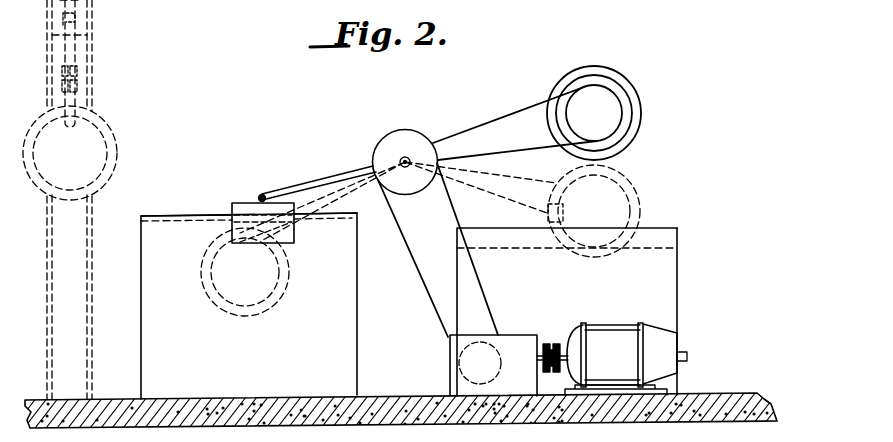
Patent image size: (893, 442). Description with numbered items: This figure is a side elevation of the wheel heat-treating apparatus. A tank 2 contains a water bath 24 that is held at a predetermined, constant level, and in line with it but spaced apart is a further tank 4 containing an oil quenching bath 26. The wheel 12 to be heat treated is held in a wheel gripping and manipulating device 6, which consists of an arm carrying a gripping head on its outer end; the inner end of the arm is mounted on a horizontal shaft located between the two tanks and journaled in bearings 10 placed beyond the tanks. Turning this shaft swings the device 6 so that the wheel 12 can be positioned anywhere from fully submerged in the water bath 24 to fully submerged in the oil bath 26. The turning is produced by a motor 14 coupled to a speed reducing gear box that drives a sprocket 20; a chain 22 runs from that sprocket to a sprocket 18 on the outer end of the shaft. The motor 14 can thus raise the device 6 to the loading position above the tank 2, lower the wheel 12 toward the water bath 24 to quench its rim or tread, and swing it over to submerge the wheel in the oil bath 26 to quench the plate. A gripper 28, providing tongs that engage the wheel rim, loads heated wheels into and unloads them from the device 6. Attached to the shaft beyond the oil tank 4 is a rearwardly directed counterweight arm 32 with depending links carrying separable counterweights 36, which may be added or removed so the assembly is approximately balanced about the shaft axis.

The tank 2 is at (677, 282).
The further tank 4 is at (140, 326).
The wheel gripping and manipulating device 6 is at (492, 118).
The bearings 10 is at (523, 0).
The wheel 12 is at (643, 100).
The motor 14 is at (655, 347).
The sprocket 18 is at (377, 147).
The sprocket 20 is at (450, 375).
The chain 22 is at (408, 260).
The water bath 24 is at (652, 242).
The oil quenching bath 26 is at (175, 218).
The gripper 28 is at (77, 77).
The counterweight arm 32 is at (296, 189).
The separable counterweights 36 is at (248, 202).